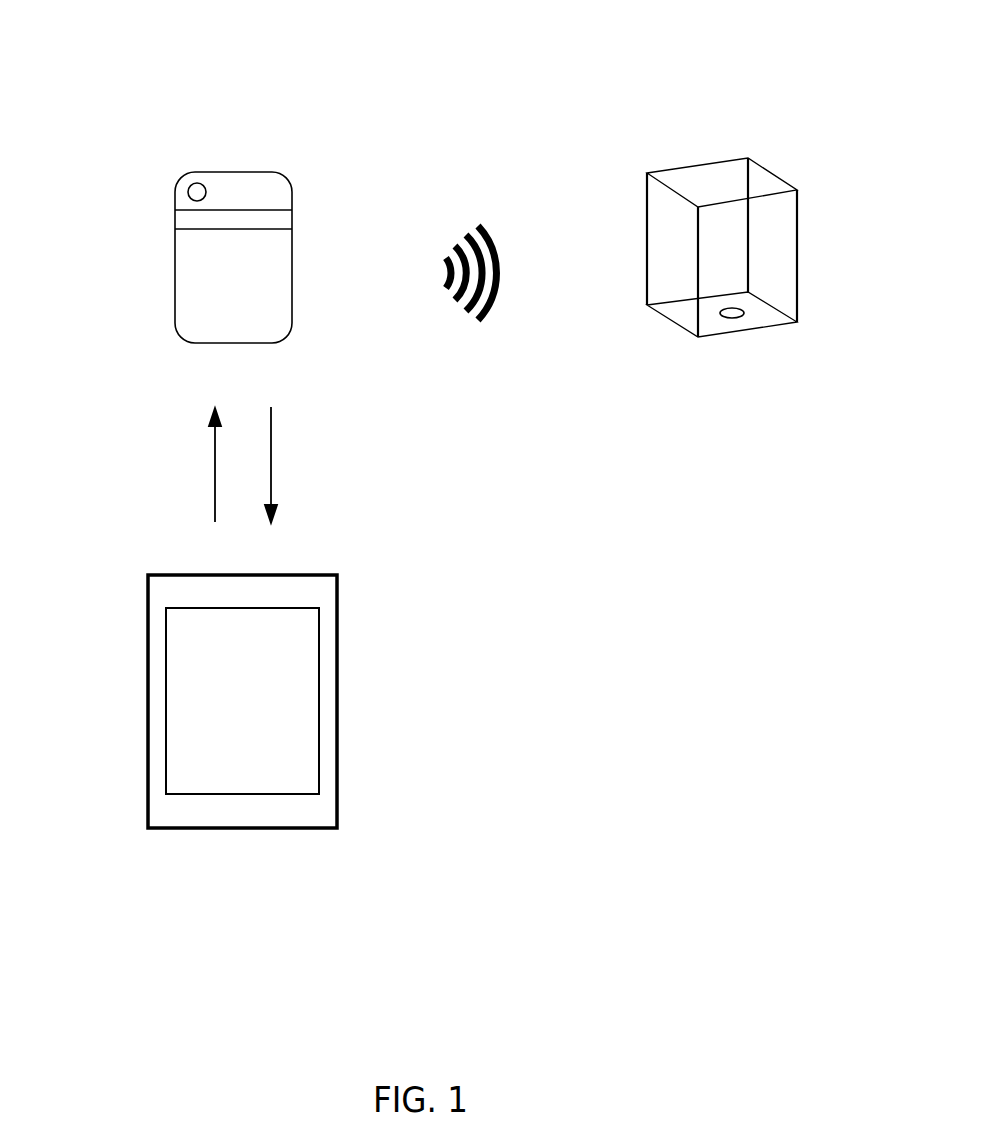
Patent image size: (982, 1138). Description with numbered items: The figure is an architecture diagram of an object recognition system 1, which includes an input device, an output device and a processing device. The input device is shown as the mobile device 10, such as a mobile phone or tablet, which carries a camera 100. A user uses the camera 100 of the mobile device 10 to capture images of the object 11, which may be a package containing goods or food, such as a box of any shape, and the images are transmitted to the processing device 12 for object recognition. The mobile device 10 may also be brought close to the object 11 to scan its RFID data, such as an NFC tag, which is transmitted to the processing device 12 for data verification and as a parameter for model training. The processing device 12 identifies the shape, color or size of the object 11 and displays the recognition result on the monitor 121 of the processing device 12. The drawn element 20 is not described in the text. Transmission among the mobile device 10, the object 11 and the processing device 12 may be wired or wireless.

The object recognition system 1 is at (270, 107).
The mobile device 10 is at (280, 262).
The camera 100 is at (180, 192).
The object 11 is at (797, 245).
The sensing element 20 is at (744, 310).
The processing device 12 is at (155, 688).
The monitor 121 is at (320, 638).